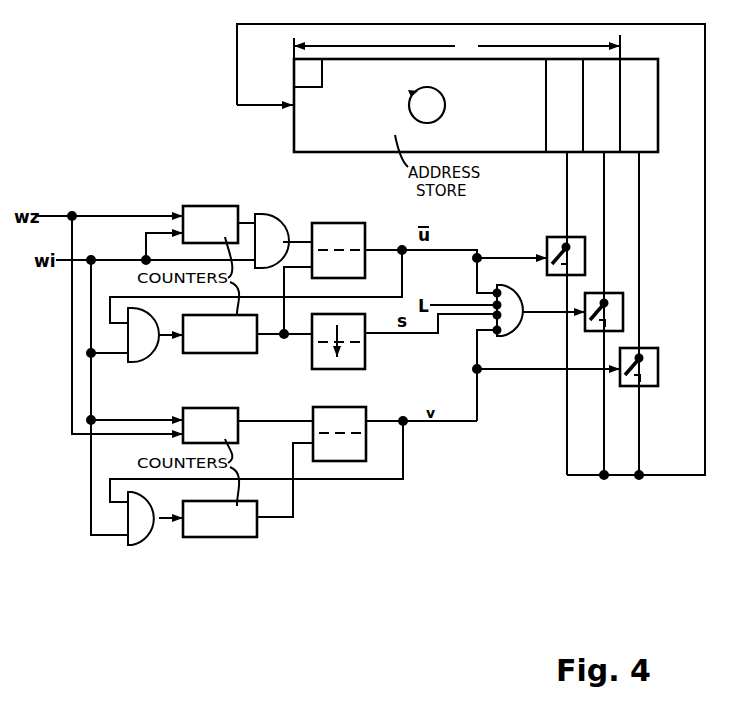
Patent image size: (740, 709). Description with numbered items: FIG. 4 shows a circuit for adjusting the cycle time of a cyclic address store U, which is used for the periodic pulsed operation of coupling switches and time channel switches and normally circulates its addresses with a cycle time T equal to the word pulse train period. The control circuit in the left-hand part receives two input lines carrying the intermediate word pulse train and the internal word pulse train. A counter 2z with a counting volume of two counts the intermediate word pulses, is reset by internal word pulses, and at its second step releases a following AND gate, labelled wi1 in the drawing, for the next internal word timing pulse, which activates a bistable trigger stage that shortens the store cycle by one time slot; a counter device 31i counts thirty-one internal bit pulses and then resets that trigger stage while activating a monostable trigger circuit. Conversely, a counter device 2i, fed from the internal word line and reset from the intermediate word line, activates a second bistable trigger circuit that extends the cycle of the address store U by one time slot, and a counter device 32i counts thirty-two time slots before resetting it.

The counter 2z is at (210, 224).
The counter device 31i is at (220, 334).
The counter device 2i is at (210, 425).
The counter device 32i is at (220, 519).
The AND gate wi1 is at (280, 232).
The cyclic address store U is at (476, 105).
The cycle time T is at (457, 46).